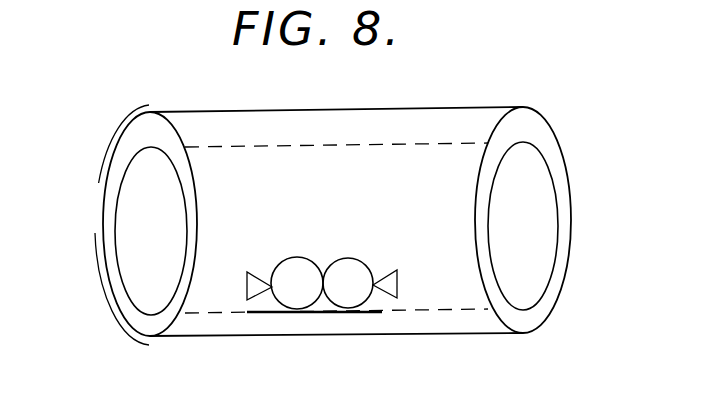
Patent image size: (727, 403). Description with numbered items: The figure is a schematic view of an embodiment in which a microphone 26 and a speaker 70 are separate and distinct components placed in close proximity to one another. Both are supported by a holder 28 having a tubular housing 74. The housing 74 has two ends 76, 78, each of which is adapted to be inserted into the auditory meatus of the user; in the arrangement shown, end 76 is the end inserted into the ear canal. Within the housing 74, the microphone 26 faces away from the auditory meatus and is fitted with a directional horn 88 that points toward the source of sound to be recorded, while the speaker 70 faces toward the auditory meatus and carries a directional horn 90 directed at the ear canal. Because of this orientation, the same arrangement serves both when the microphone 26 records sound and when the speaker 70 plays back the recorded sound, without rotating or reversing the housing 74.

The microphone 26 is at (302, 262).
The holder 28 is at (137, 224).
The speaker 70 is at (353, 262).
The housing 74 is at (389, 130).
The end 76 is at (562, 246).
The end 78 is at (120, 158).
The directional horn 88 is at (256, 271).
The directional horn 90 is at (395, 270).